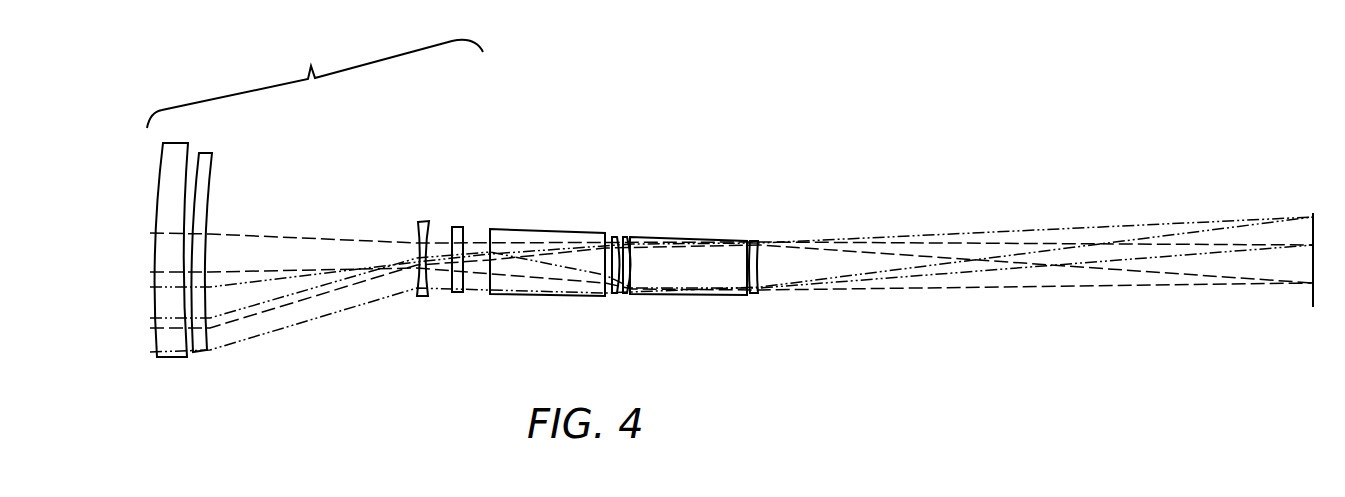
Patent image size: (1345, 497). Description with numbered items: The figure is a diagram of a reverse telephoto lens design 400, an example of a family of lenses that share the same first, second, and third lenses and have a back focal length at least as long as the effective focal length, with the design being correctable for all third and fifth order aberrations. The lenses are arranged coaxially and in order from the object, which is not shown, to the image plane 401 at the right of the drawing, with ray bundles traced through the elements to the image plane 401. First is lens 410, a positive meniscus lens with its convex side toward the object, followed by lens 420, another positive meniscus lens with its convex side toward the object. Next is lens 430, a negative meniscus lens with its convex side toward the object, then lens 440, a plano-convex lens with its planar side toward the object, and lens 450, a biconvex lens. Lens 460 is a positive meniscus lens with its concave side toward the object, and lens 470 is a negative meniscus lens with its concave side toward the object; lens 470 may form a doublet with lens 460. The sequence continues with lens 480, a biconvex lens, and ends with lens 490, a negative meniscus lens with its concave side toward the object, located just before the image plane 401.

The lens design 400 is at (312, 65).
The image plane 401 is at (1318, 232).
The lens 410 is at (177, 143).
The lens 420 is at (210, 183).
The lens 430 is at (423, 222).
The lens 440 is at (458, 227).
The lens 450 is at (554, 229).
The lens 460 is at (615, 237).
The lens 470 is at (628, 237).
The lens 480 is at (695, 238).
The lens 490 is at (757, 241).